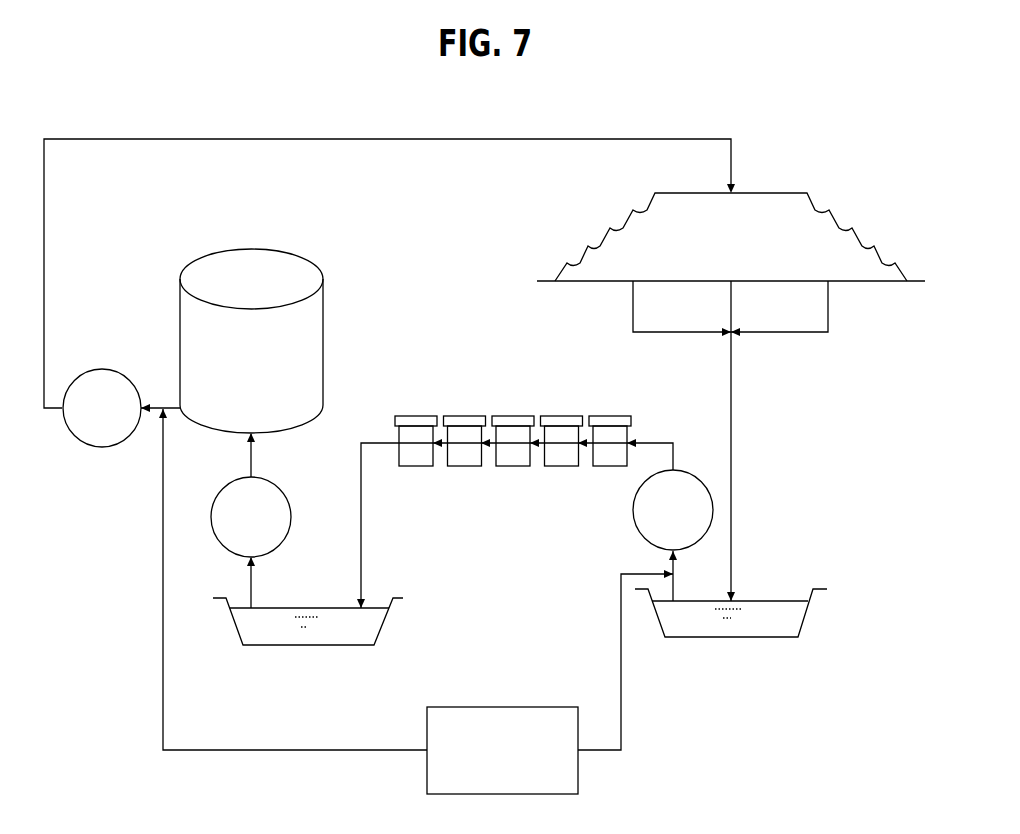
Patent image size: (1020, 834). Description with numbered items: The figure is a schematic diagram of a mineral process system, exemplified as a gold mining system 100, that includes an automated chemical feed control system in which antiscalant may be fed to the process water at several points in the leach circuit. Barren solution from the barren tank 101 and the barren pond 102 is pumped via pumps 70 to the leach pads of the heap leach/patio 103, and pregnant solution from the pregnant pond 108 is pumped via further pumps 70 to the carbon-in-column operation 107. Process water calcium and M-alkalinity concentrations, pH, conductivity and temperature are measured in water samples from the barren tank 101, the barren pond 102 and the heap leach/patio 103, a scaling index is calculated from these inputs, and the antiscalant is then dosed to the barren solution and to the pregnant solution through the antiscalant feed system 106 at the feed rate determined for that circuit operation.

The gold mining system 100 is at (797, 473).
The pumps 70 is at (89, 420).
The barren tank 101 is at (231, 363).
The barren pond 102 is at (380, 630).
The heap leach/patio 103 is at (712, 243).
The antiscalant feed system 106 is at (484, 756).
The carbon-in-column operation 107 is at (512, 415).
The pregnant pond 108 is at (805, 618).